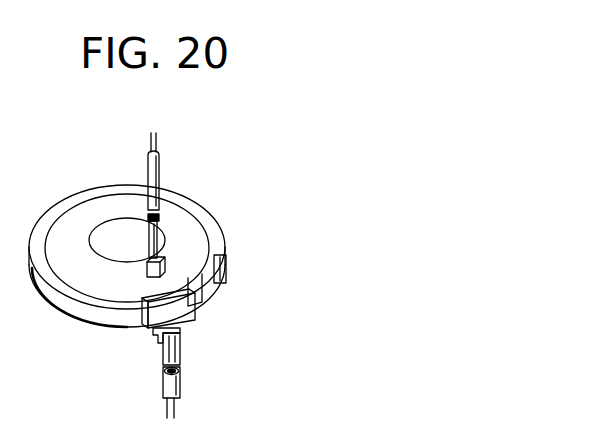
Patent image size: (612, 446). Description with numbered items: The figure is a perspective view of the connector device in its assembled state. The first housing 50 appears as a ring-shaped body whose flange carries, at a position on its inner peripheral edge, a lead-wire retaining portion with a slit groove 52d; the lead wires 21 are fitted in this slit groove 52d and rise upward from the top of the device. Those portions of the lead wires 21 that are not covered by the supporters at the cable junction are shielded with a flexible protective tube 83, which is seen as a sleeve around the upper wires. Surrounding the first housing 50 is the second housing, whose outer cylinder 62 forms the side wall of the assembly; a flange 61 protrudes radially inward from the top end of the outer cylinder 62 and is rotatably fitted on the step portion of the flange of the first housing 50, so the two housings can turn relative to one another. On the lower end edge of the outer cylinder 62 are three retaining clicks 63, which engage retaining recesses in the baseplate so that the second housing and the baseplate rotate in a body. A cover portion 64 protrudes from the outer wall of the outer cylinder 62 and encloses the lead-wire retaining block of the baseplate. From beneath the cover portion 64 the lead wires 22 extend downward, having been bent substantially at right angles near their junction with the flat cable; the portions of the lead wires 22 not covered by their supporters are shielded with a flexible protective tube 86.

The lead wires 21 is at (152, 143).
The flexible protective tube 83 is at (160, 173).
The first housing 50 is at (166, 265).
The slit groove 52d is at (160, 242).
The flange 61 is at (225, 242).
The outer cylinder 62 is at (227, 275).
The retaining clicks 63 is at (63, 312).
The cover portion 64 is at (147, 322).
The flexible protective tube 86 is at (180, 380).
The lead wires 22 is at (177, 405).